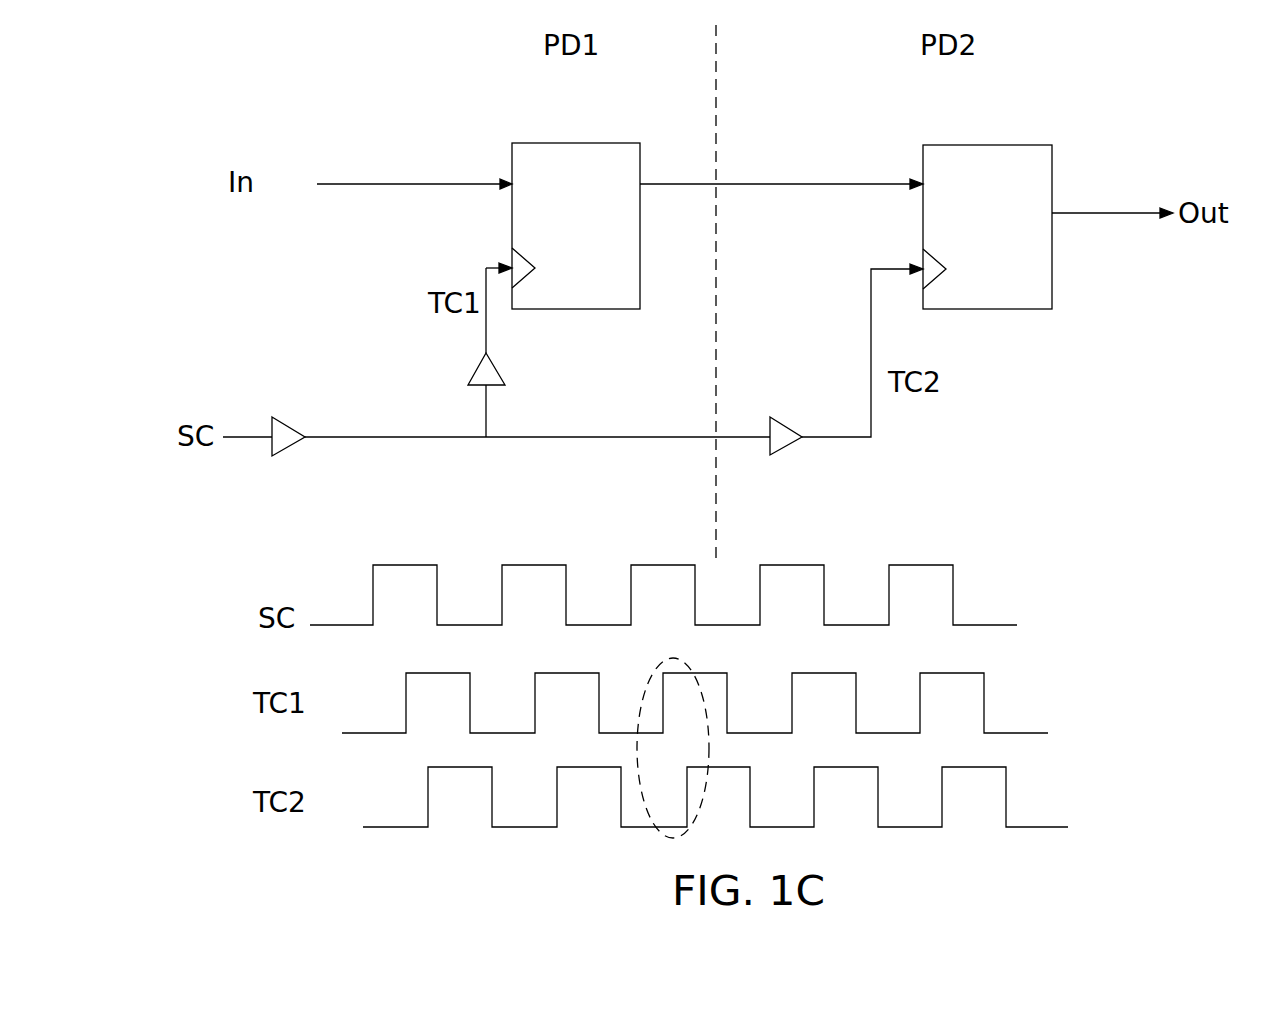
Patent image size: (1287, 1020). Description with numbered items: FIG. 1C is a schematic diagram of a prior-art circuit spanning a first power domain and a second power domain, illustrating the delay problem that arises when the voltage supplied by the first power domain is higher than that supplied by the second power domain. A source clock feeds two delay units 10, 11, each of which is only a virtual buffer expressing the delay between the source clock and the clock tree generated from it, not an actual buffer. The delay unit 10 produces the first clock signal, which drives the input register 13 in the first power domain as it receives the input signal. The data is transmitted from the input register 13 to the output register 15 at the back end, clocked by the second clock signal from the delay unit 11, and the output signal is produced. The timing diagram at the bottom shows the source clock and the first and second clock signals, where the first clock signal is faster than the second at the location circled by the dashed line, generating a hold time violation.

The delay unit 10 is at (289, 421).
The delay unit 11 is at (788, 421).
The input register 13 is at (512, 143).
The output register 15 is at (987, 145).